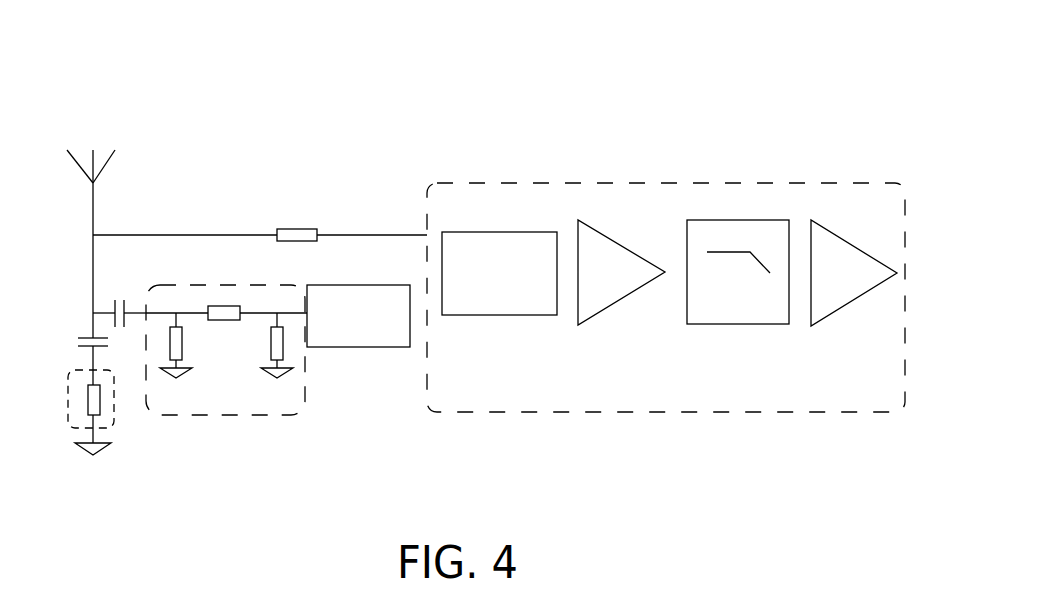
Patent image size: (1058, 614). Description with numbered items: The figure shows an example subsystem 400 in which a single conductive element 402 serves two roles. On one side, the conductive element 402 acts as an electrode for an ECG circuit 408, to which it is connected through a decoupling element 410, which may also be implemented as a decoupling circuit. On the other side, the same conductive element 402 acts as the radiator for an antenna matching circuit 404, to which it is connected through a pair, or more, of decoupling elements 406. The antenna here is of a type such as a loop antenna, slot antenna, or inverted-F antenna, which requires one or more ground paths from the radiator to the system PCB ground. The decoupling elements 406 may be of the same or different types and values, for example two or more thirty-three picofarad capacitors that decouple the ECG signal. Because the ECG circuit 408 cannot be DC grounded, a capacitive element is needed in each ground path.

The subsystem 400 is at (834, 88).
The conductive element 402 is at (141, 173).
The antenna matching circuit 404 is at (116, 413).
The decoupling elements 406 is at (69, 323).
The ECG circuit 408 is at (645, 166).
The decoupling element 410 is at (336, 216).